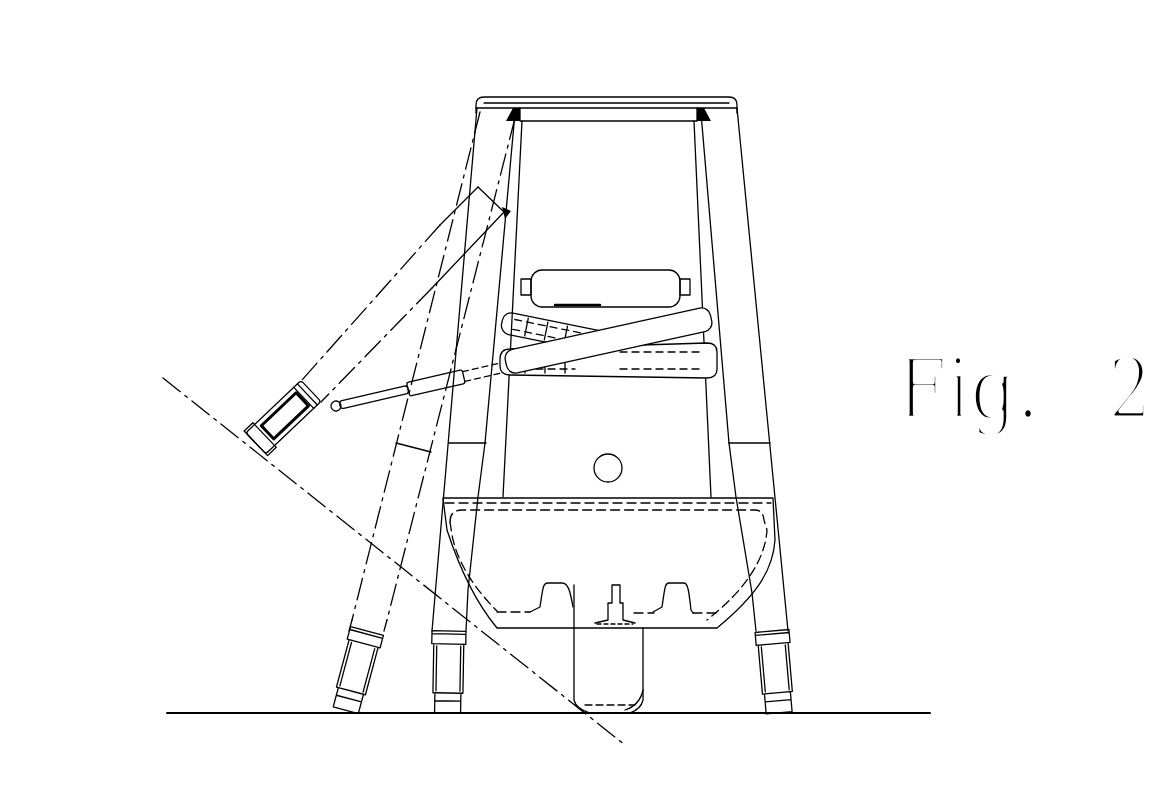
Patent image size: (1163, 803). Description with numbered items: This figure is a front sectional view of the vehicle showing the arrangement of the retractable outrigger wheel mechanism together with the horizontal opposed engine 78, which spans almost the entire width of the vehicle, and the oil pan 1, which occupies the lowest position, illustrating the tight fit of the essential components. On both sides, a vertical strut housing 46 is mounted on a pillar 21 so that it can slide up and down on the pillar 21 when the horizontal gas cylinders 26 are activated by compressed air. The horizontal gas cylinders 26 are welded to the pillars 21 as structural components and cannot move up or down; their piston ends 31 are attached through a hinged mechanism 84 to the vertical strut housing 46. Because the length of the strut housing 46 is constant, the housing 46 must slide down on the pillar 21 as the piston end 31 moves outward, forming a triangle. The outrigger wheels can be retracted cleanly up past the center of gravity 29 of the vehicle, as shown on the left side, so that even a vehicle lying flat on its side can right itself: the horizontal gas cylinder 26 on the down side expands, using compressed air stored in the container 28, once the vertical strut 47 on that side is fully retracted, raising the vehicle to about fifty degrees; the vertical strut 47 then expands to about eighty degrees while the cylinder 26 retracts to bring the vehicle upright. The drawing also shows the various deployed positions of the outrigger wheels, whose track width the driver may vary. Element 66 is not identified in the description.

The oil pan 1 is at (653, 603).
The pillar 21 is at (697, 228).
The horizontal gas cylinder 26 is at (680, 324).
The container 28 is at (595, 280).
The center of gravity 29 is at (612, 454).
The piston end 31 is at (363, 412).
The vertical strut housing 46 is at (416, 266).
The vertical strut 47 is at (783, 602).
The foot 66 is at (791, 693).
The horizontal opposed engine 78 is at (576, 512).
The hinged mechanism 84 is at (331, 411).